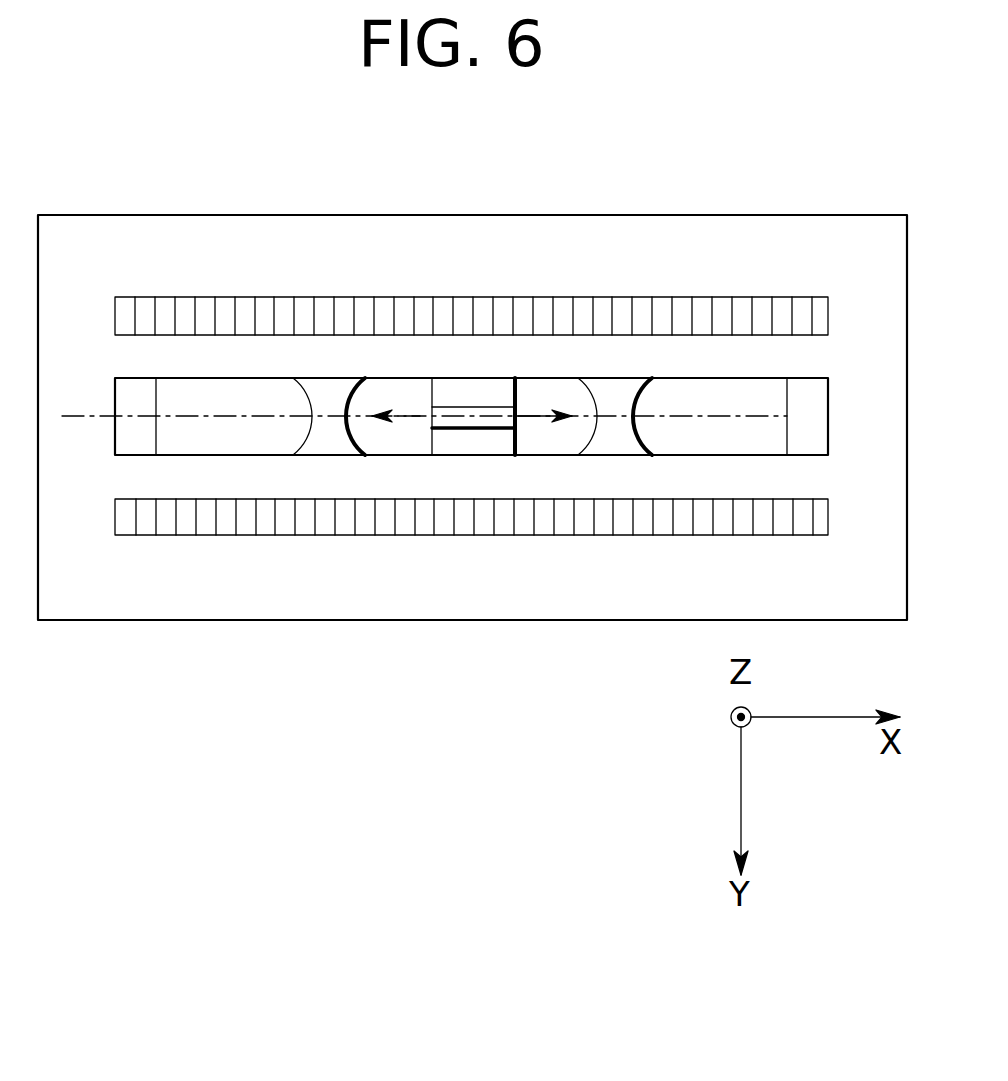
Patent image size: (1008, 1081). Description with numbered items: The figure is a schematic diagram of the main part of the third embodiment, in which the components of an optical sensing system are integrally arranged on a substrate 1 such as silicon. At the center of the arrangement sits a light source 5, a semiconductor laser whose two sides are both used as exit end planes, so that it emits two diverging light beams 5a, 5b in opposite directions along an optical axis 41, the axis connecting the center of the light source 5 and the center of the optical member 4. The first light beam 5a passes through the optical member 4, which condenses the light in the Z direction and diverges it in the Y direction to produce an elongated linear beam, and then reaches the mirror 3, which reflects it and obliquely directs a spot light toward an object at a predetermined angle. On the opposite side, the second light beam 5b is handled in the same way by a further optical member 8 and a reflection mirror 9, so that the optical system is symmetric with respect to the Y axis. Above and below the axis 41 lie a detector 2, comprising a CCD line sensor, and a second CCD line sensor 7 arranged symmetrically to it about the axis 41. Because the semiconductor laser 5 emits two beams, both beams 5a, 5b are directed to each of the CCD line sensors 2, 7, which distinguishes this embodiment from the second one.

The substrate 1 is at (134, 215).
The detector 2 is at (196, 297).
The mirror 3 is at (126, 436).
The optical member 4 is at (325, 443).
The light source 5 is at (502, 440).
The light beam 5a is at (402, 414).
The light beam 5b is at (539, 414).
The CCD line sensor 7 is at (200, 535).
The optical member 8 is at (620, 443).
The reflection mirror 9 is at (817, 436).
The axis 41 is at (673, 412).